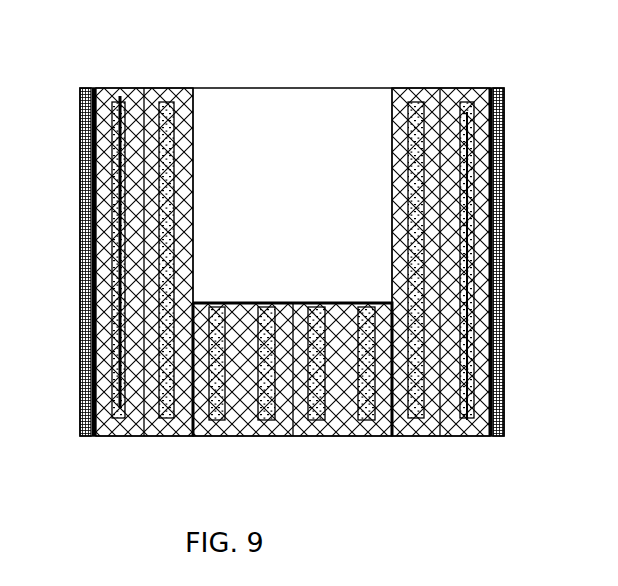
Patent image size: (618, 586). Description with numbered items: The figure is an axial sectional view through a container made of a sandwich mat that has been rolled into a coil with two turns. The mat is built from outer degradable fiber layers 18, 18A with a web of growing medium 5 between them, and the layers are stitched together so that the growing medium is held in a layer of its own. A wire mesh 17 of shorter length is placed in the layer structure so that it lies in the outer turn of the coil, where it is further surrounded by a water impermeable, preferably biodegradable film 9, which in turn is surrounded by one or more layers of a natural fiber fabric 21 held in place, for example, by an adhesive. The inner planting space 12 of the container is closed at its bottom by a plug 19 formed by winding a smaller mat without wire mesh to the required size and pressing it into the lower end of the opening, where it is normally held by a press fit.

The growing medium 5 is at (112, 380).
The water impermeable film 9 is at (92, 88).
The inner planting space 12 is at (295, 100).
The wire mesh layer 17 is at (121, 96).
The outer degradable fiber layer 18 is at (410, 92).
The outer degradable fiber layer 18A is at (101, 323).
The plug 19 is at (275, 436).
The natural fiber fabric 21 is at (80, 202).